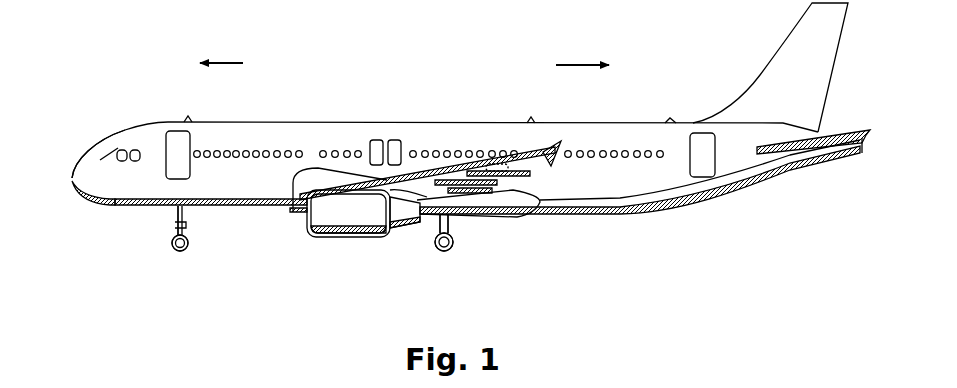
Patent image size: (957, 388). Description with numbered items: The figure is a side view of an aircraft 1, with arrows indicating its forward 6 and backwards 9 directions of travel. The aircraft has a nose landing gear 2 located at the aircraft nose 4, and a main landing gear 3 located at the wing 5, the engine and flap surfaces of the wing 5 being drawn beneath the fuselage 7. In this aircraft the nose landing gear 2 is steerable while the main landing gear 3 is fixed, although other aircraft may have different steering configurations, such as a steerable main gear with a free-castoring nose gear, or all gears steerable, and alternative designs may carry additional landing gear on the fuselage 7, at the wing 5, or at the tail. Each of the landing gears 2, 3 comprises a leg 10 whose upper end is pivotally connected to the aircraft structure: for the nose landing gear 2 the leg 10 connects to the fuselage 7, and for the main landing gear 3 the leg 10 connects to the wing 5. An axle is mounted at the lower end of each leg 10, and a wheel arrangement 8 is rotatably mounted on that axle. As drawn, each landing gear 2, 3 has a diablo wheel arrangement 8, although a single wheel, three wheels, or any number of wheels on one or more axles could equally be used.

The aircraft 1 is at (332, 91).
The nose landing gear 2 is at (171, 257).
The main landing gear 3 is at (439, 256).
The aircraft nose 4 is at (72, 174).
The wing 5 is at (477, 157).
The forward direction of travel 6 is at (221, 48).
The fuselage 7 is at (588, 214).
The wheel arrangement 8 is at (171, 242).
The backwards direction of travel 9 is at (582, 51).
The leg 10 is at (184, 223).